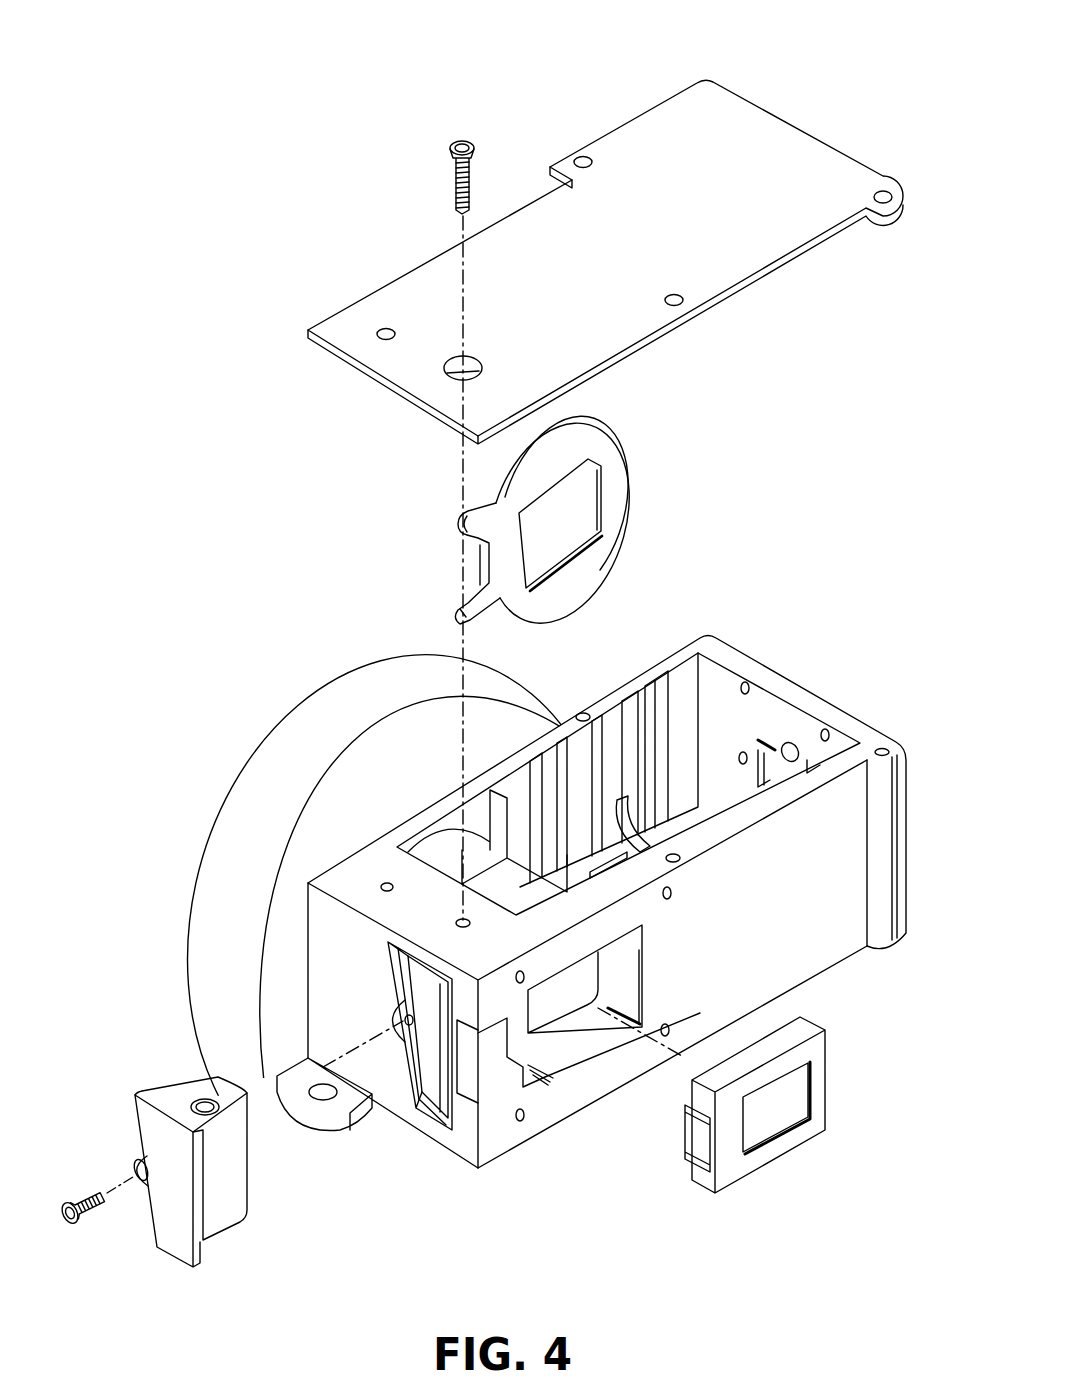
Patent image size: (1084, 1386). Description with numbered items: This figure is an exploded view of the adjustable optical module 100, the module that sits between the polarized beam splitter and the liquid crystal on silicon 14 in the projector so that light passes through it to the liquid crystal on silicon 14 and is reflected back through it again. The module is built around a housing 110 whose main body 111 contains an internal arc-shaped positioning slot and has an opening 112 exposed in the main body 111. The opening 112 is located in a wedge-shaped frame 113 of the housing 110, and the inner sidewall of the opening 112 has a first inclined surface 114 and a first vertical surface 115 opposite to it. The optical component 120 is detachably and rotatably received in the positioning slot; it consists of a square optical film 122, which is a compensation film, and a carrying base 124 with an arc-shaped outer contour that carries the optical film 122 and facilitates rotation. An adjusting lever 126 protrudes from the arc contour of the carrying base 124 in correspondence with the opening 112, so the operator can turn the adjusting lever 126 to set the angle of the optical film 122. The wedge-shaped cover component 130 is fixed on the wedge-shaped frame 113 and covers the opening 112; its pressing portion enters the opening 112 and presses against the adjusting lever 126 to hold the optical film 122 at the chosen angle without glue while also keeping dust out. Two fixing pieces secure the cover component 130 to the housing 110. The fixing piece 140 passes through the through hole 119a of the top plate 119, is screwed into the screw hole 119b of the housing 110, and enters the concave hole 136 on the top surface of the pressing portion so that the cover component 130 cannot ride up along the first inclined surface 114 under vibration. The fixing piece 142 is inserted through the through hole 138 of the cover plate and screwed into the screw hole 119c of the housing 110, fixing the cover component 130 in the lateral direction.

The adjustable optical module 100 is at (835, 40).
The top plate 119 is at (785, 137).
The through hole 119a is at (470, 372).
The screw hole 119b is at (457, 916).
The screw hole 119c is at (405, 1015).
The fixing piece 140 is at (455, 176).
The optical component 120 is at (445, 477).
The optical film 122 is at (555, 553).
The carrying base 124 is at (625, 483).
The adjusting lever 126 is at (473, 528).
The housing 110 is at (538, 999).
The main body 111 is at (793, 690).
The opening 112 is at (440, 1078).
The wedge-shaped frame 113 is at (397, 970).
The first inclined surface 114 is at (431, 1021).
The first vertical surface 115 is at (448, 1096).
The cover component 130 is at (171, 1074).
The concave hole 136 is at (202, 1094).
The through hole 138 is at (127, 1167).
The fixing piece 142 is at (88, 1213).
The liquid crystal on silicon 14 is at (778, 1147).